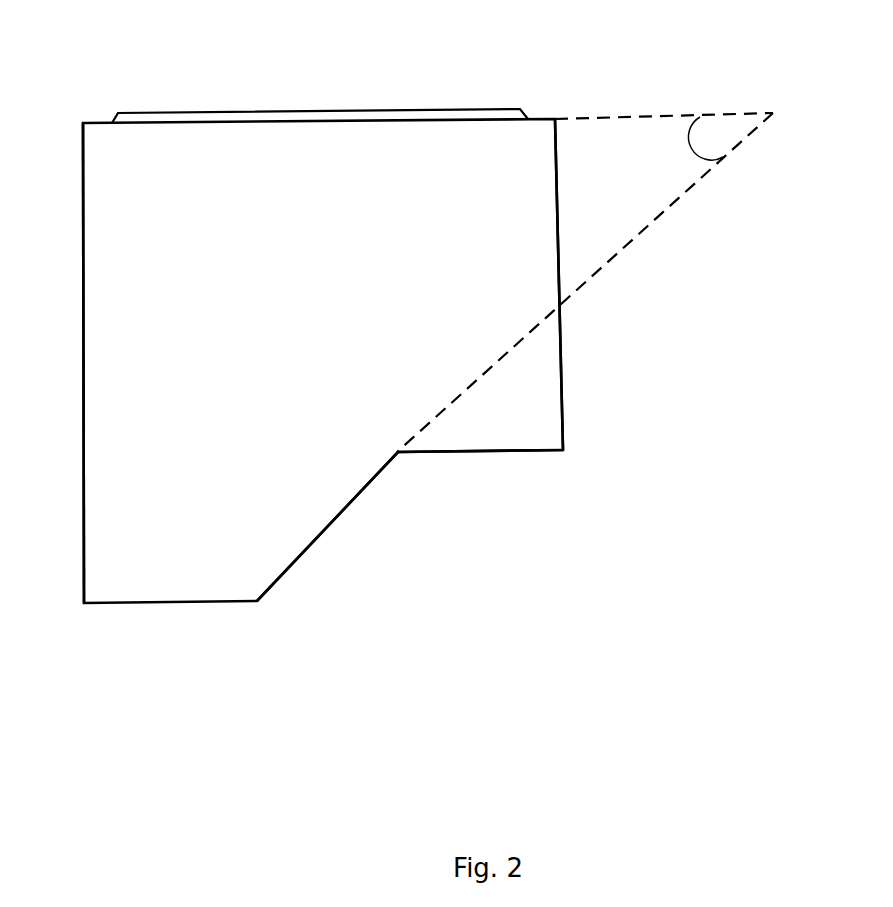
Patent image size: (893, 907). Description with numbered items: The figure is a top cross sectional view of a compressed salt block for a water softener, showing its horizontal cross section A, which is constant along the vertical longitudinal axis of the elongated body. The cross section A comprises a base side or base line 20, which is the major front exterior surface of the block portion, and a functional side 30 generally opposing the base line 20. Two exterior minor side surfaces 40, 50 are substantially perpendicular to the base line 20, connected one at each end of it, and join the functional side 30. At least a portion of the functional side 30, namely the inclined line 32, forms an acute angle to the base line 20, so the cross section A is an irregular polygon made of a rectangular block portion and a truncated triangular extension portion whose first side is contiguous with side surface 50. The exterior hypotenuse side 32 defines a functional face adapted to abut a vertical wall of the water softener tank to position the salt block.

The base side 20 is at (225, 112).
The cross section A is at (303, 193).
The exterior minor side surface 50 is at (85, 345).
The exterior minor side surface 40 is at (563, 352).
The functional side 30 is at (398, 452).
The exterior hypotenuse side 32 is at (298, 558).